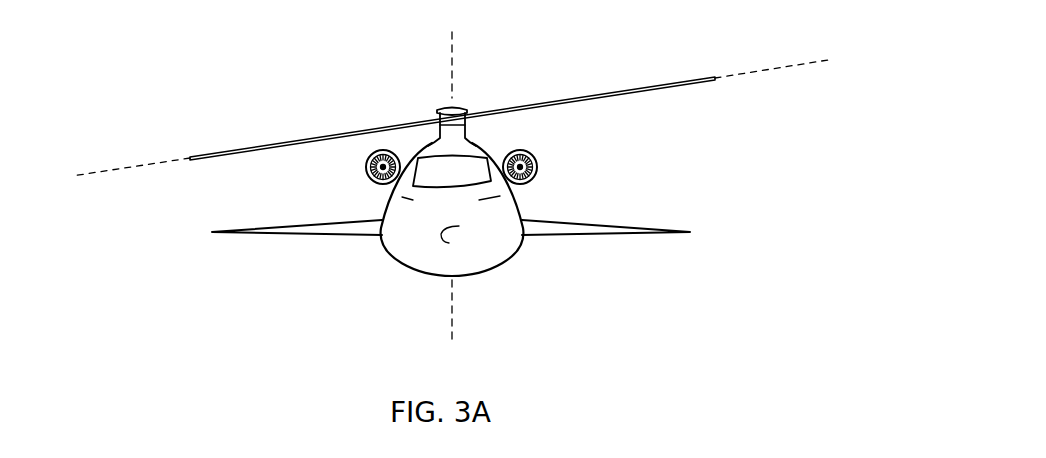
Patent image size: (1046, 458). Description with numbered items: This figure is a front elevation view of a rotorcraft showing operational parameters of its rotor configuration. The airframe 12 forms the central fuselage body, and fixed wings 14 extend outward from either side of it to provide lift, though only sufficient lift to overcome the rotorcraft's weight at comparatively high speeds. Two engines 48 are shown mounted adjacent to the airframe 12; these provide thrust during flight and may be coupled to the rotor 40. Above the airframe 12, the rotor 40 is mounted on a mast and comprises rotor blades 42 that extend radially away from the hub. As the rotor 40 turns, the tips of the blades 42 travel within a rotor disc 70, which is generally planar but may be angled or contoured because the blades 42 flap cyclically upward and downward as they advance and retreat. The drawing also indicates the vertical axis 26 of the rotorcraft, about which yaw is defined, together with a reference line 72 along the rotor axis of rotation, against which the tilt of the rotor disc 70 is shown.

The airframe 12 is at (400, 258).
The fixed wings 14 is at (307, 235).
The vertical axis 26 is at (458, 325).
The rotor 40 is at (403, 104).
The rotor blades 42 is at (257, 146).
The engines 48 is at (366, 171).
The rotor disc 70 is at (767, 72).
The vertical axis 72 is at (458, 52).